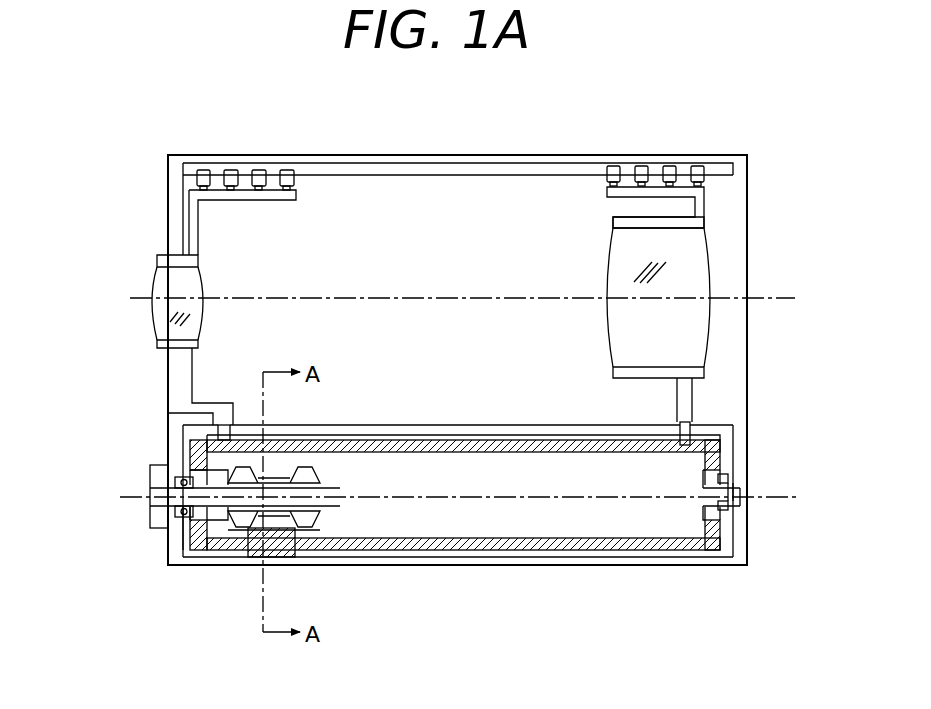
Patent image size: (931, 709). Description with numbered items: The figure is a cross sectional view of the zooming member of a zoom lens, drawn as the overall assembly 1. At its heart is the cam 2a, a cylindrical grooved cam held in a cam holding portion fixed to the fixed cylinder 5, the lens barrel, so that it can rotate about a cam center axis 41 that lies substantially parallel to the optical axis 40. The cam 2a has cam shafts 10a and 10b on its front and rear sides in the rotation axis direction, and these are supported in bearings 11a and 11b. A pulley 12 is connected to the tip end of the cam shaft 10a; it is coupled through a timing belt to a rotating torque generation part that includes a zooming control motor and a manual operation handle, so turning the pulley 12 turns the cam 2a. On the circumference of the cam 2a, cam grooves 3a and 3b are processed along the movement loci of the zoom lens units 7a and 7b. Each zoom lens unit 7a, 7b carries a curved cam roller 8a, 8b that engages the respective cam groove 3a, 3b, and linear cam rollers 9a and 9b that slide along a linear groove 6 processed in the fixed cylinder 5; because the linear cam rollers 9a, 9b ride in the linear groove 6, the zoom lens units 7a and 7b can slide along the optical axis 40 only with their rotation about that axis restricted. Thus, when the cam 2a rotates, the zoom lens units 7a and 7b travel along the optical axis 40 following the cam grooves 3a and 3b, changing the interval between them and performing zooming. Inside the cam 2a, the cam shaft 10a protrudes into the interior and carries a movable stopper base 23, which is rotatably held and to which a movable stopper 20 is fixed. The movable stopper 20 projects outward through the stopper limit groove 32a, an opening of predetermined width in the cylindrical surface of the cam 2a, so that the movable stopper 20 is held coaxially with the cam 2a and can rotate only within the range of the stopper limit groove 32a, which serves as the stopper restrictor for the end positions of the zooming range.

The image reading apparatus 1 is at (422, 145).
The fixed cylinder 5 is at (336, 155).
The linear groove 6 is at (492, 170).
The linear cam roller 9a is at (205, 168).
The linear cam roller 9b is at (614, 166).
The zoom lens unit 7a is at (157, 278).
The zoom lens unit 7b is at (710, 262).
The optical axis 40 is at (130, 298).
The curved cam roller 8a is at (218, 432).
The curved cam roller 8b is at (690, 430).
The cam groove 3a is at (195, 445).
The cam groove 3b is at (665, 440).
The cam 2a is at (490, 548).
The cam center axis 41 is at (125, 497).
The pulley 12 is at (152, 522).
The bearing 11a is at (178, 508).
The bearing 11b is at (190, 548).
The cam shaft 10a is at (210, 545).
The cam shaft 10b is at (703, 500).
The movable stopper base 23 is at (300, 462).
The movable stopper 20 is at (310, 510).
The stopper limit groove 32a is at (300, 548).